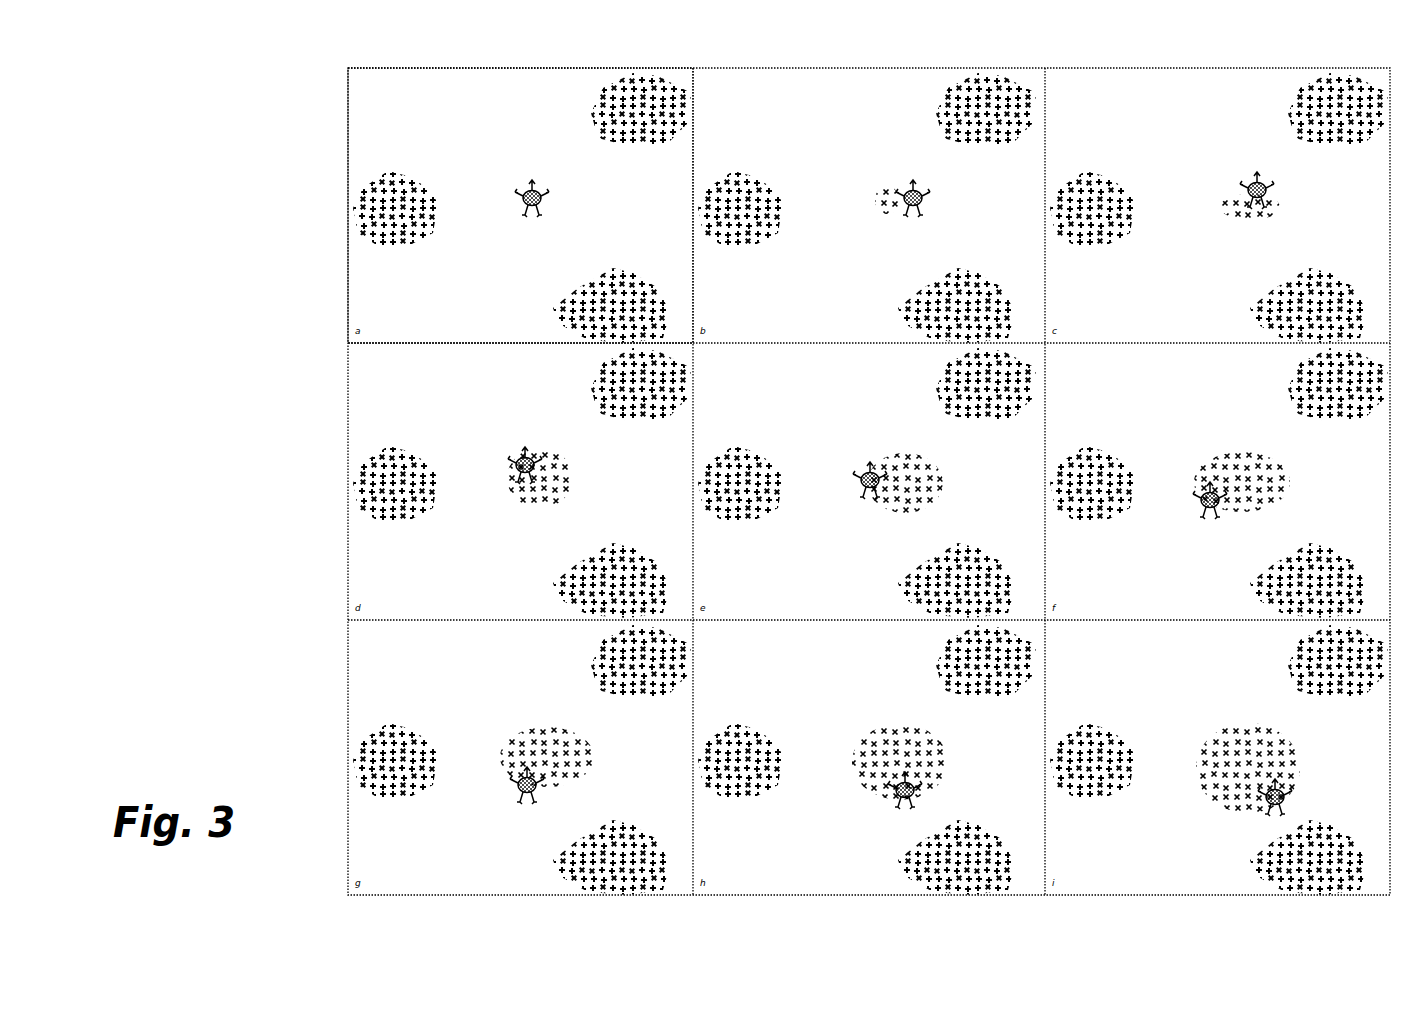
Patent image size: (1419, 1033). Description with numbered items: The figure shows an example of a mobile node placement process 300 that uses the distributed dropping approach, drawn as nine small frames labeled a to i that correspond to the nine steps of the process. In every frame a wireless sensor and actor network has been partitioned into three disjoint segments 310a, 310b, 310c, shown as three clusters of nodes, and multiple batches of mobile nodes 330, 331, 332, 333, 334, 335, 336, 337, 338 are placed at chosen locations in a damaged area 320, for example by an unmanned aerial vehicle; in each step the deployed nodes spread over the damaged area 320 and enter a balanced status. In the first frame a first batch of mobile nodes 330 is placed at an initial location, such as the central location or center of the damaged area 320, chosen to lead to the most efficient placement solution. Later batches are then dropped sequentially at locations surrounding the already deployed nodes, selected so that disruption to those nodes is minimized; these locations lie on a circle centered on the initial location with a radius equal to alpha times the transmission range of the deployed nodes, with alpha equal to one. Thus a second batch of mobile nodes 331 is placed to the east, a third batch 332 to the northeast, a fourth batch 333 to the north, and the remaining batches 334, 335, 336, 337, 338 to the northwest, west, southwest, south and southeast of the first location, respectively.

The mobile node placement process 300 is at (756, 481).
The damaged area 320 is at (500, 190).
The disjoint segment 310a is at (321, 208).
The disjoint segment 310b is at (597, 83).
The disjoint segment 310c is at (551, 305).
The first batch of mobile nodes 330 is at (581, 190).
The second batch of mobile nodes 331 is at (951, 190).
The third batch of mobile nodes 332 is at (1296, 191).
The fourth batch of mobile nodes 333 is at (573, 467).
The batch of mobile nodes 334 is at (866, 453).
The batch of mobile nodes 335 is at (1195, 505).
The batch of mobile nodes 336 is at (517, 748).
The batch of mobile nodes 337 is at (854, 791).
The batch of mobile nodes 338 is at (1209, 790).